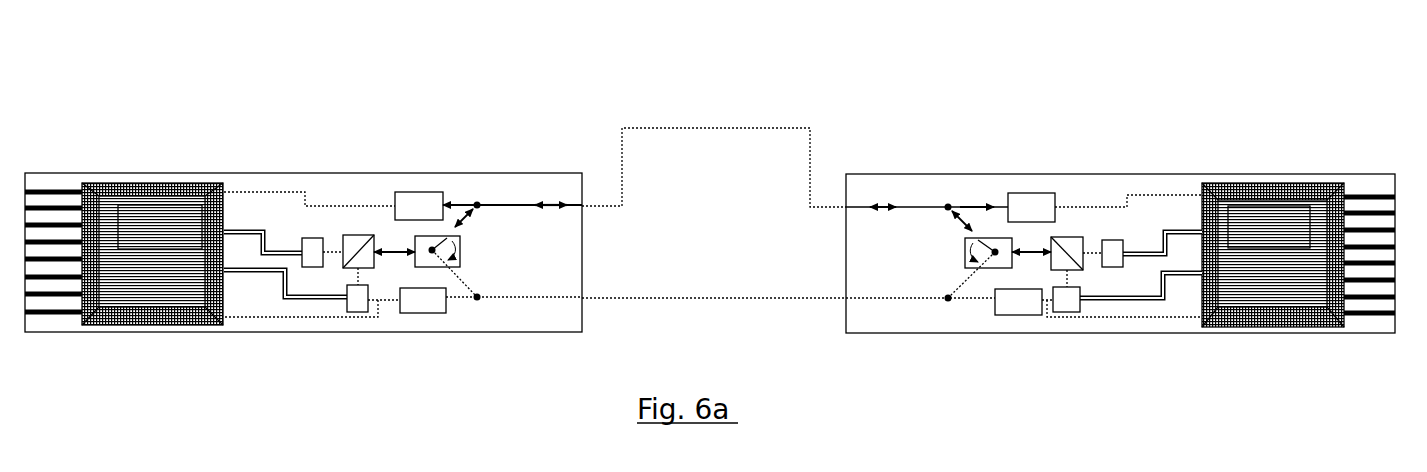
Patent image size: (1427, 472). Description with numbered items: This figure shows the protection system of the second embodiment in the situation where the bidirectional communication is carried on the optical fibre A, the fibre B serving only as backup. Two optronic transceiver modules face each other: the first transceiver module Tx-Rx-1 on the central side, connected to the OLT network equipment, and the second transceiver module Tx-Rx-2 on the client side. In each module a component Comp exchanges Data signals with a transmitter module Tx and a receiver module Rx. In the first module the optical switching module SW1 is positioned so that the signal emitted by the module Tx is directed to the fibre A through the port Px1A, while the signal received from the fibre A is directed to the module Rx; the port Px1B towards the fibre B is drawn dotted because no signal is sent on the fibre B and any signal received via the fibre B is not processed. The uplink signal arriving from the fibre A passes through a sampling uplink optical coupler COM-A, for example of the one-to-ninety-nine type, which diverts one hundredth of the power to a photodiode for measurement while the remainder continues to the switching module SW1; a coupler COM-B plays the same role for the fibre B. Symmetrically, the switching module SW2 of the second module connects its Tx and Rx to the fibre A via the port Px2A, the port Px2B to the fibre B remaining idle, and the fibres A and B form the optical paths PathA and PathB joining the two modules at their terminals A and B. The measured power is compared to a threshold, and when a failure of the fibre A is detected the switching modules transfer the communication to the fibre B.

The first transceiver module Tx-Rx-1 is at (172, 166).
The second transceiver module Tx-Rx-2 is at (1230, 175).
The computing component Comp is at (152, 254).
The data conductor Data is at (285, 251).
The Tx module Tx is at (312, 252).
The Rx module Rx is at (357, 298).
The optical switching module SW1 is at (462, 251).
The optical switching module SW2 is at (959, 253).
The first transceiver port A Px1A is at (419, 206).
The first transceiver port B Px1B is at (423, 300).
The second transceiver port A Px2A is at (1031, 207).
The second transceiver port B Px2B is at (1018, 302).
The sampling uplink optical coupler COM-A is at (983, 163).
The common node B COM-B is at (948, 298).
The fibre A is at (718, 193).
The fibre B is at (717, 285).
The communication path A PathA is at (714, 167).
The communication path B PathB is at (714, 282).